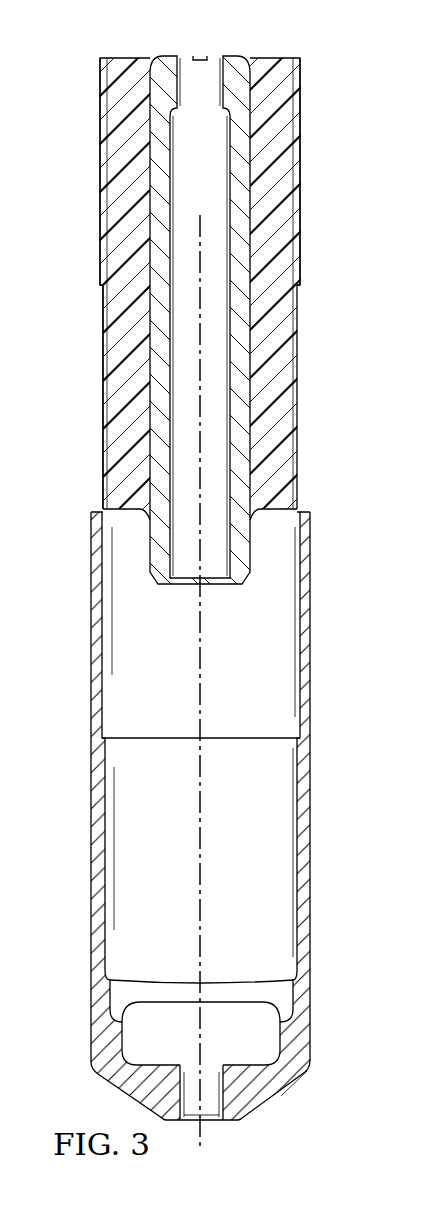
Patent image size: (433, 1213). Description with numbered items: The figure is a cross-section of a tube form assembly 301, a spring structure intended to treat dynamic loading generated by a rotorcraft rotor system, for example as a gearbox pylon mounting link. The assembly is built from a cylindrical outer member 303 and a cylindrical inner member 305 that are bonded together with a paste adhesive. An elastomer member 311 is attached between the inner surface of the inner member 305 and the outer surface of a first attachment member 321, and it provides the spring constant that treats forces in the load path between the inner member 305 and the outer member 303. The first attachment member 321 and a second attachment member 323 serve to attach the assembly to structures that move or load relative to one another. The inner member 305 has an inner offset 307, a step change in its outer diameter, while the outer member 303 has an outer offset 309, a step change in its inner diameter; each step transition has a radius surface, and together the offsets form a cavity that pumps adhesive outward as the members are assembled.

The tube form assembly 301 is at (194, 588).
The outer member 303 is at (168, 842).
The inner member 305 is at (302, 174).
The inner offset 307 is at (102, 287).
The outer offset 309 is at (102, 738).
The elastomer member 311 is at (207, 289).
The first attachment member 321 is at (167, 53).
The second attachment member 323 is at (213, 1123).